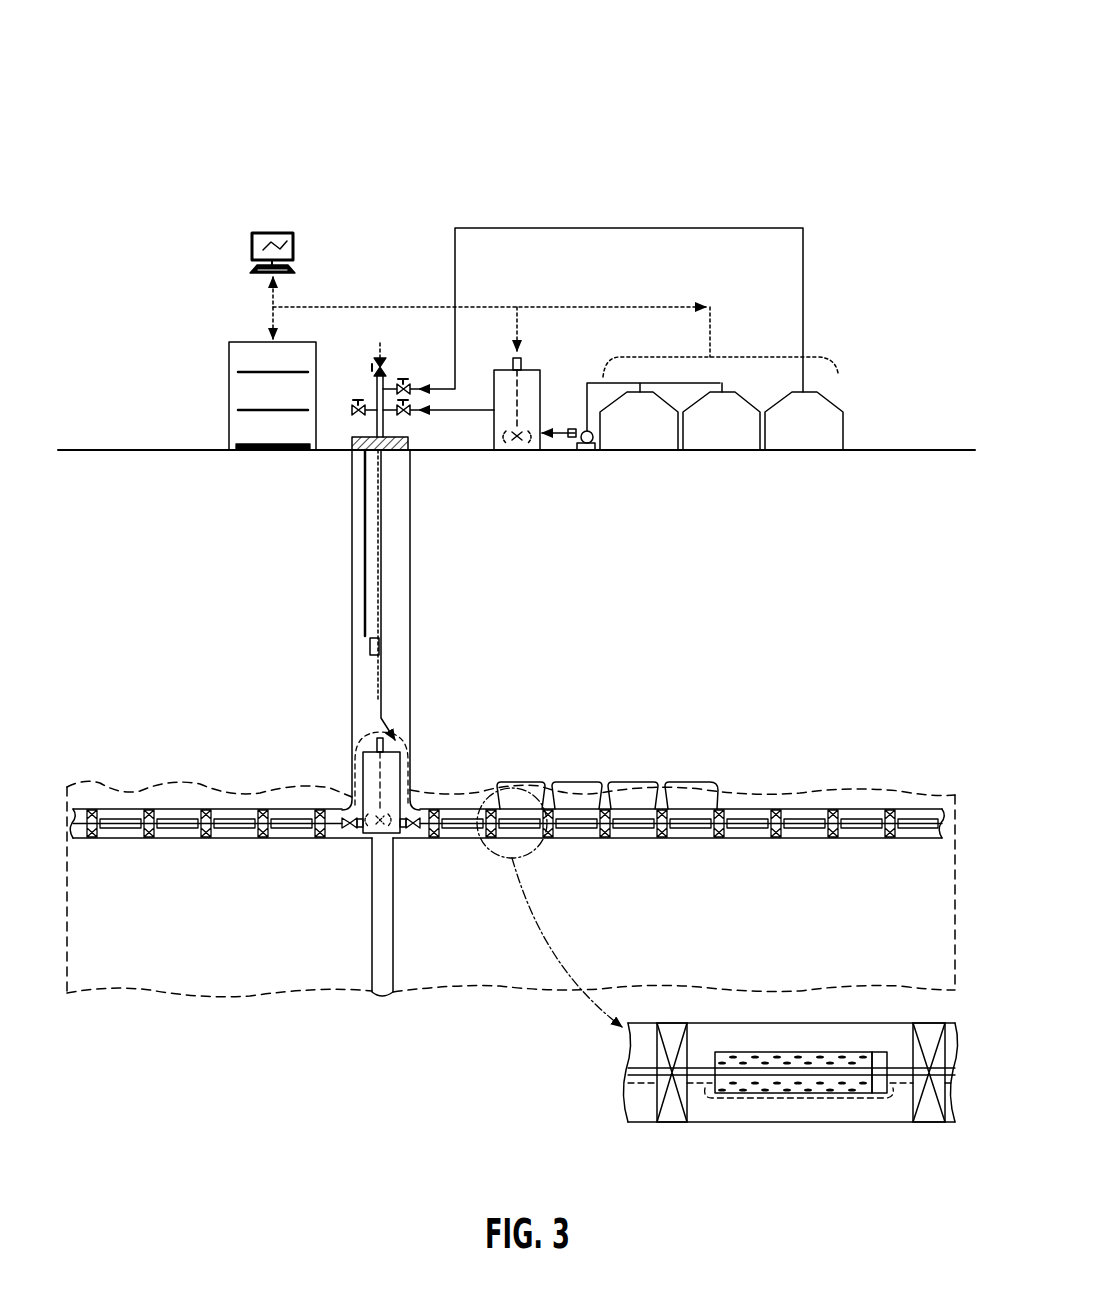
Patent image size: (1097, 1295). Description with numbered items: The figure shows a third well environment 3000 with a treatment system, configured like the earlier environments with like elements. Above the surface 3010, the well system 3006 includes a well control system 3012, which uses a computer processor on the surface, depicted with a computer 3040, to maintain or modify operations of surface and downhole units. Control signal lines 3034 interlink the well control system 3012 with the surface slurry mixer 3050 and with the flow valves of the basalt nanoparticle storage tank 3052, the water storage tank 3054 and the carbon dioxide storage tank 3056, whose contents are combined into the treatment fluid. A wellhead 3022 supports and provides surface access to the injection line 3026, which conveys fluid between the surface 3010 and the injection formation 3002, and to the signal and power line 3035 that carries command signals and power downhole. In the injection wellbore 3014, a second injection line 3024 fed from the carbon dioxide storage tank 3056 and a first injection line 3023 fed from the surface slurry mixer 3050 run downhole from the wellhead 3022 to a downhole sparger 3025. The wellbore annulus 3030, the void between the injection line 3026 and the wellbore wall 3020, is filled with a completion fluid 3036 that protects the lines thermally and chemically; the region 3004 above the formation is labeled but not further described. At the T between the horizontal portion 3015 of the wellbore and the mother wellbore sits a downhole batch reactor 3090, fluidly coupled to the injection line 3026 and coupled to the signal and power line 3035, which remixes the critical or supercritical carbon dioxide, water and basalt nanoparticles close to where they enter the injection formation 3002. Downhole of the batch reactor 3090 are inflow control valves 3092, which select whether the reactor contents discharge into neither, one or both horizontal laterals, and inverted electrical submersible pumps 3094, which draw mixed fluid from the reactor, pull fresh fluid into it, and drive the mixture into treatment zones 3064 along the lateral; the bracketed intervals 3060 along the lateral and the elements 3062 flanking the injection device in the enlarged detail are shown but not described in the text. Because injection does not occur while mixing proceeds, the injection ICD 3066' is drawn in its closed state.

The well environment 3000 is at (156, 38).
The well system 3006 is at (242, 130).
The surface 3010 is at (148, 450).
The computer controller 3040 is at (272, 232).
The well control system 3012 is at (250, 342).
The wellhead 3022 is at (362, 394).
The control signal lines 3034 is at (700, 275).
The surface slurry mixer 3050 is at (533, 362).
The basalt nanoparticle storage tank 3052 is at (612, 450).
The water storage tank 3054 is at (720, 443).
The CO2 storage tank 3056 is at (815, 443).
The wellbore wall 3020 is at (410, 603).
The injection wellbore 3014 is at (428, 636).
The completion fluid 3036 is at (393, 522).
The second injection line 3024 is at (363, 493).
The injection line 3026 is at (382, 573).
The first injection line 3023 is at (382, 630).
The signal and power line 3035 is at (373, 563).
The downhole sparger 3025 is at (368, 647).
The wellbore annulus 3030 is at (362, 693).
The formation 3004 is at (814, 658).
The injection formation 3002 is at (162, 962).
The horizontal portion of the wellbore 3015 is at (372, 852).
The inflow control valves 3092 is at (399, 838).
The downhole batch reactor 3090 is at (402, 754).
The inverted electrical submersible pumps 3094 is at (334, 818).
The fracture zone 3060 is at (577, 782).
The treatment zones 3064 is at (860, 817).
The packer 3062 is at (670, 1032).
The injection ICD 3066' is at (799, 1014).